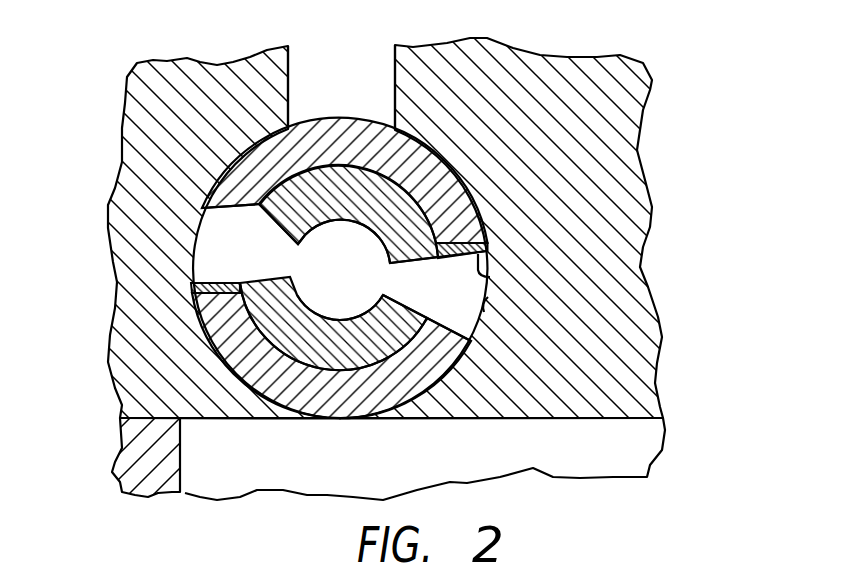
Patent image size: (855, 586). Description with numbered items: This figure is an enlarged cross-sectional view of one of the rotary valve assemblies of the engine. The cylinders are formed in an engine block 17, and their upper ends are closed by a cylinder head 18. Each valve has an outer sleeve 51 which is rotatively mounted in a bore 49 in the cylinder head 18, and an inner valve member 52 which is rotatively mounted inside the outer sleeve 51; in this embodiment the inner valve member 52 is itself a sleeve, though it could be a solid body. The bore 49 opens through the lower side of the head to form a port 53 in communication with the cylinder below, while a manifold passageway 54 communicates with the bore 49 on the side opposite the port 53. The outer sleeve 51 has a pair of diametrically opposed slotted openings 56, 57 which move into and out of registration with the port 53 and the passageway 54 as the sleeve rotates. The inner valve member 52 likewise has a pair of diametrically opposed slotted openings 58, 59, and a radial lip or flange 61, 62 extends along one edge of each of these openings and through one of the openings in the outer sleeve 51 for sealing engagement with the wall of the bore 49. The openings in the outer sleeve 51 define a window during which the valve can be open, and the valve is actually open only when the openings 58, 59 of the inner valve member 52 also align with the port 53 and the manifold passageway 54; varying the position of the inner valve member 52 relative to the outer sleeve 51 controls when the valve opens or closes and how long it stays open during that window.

The engine block 17 is at (141, 473).
The cylinder head 18 is at (197, 72).
The bore 49 is at (493, 298).
The outer sleeve 51 is at (387, 147).
The inner valve member 52 is at (298, 221).
The port 53 is at (381, 418).
The manifold passageway 54 is at (290, 62).
The slotted opening 56 is at (470, 340).
The slotted opening 57 is at (260, 204).
The slotted opening 58 is at (397, 293).
The slotted opening 59 is at (273, 228).
The radial lip or flange 61 is at (497, 278).
The radial lip or flange 62 is at (214, 283).